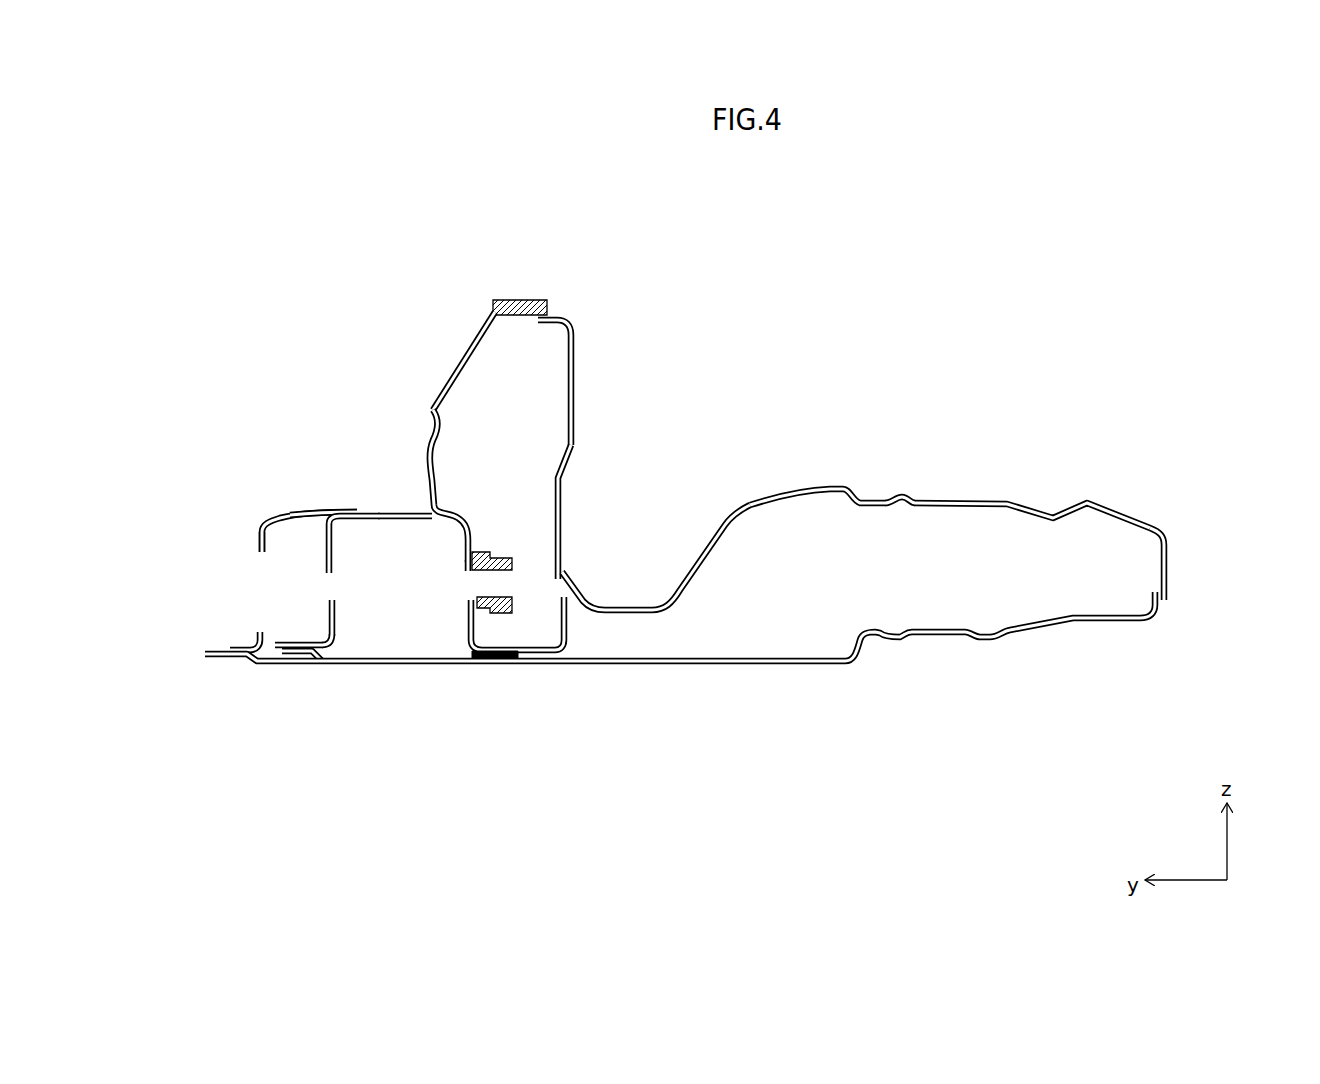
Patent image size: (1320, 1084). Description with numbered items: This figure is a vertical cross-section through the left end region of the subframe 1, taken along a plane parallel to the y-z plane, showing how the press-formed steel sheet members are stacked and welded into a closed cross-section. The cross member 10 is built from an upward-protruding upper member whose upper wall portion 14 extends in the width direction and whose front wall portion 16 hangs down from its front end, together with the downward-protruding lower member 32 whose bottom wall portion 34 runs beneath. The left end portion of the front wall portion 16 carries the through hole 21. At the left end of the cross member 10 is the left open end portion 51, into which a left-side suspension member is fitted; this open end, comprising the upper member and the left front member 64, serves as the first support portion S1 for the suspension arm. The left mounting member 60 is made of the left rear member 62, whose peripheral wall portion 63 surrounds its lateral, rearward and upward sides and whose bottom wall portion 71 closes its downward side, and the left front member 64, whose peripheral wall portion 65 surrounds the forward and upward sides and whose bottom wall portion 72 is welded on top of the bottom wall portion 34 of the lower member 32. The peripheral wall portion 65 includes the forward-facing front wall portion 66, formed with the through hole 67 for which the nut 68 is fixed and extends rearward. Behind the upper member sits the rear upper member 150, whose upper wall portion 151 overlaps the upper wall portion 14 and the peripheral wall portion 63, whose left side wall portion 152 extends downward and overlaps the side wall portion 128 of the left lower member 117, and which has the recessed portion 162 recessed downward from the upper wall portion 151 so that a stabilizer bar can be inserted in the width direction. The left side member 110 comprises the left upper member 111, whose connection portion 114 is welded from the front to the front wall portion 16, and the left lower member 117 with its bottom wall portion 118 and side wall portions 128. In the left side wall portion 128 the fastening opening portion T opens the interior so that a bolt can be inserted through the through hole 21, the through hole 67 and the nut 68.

The subframe 1 is at (772, 315).
The cross member 10 is at (412, 508).
The upper wall portion 14 is at (377, 513).
The front wall portion 16 is at (333, 640).
The through hole 21 is at (330, 600).
The lower member 32 is at (433, 640).
The bottom wall portion 34 is at (373, 660).
The left open end portion 51 is at (410, 688).
The left mounting member 60 is at (627, 290).
The left rear member 62 is at (590, 355).
The peripheral wall portion 63 is at (583, 430).
The left front member 64 is at (450, 365).
The peripheral wall portion 65 is at (428, 417).
The front wall portion 66 is at (465, 553).
The through hole 67 is at (465, 572).
The nut 68 is at (483, 560).
The bottom wall portion 71 is at (532, 660).
The bottom wall portion 72 is at (492, 660).
The left side member 110 is at (273, 513).
The left upper member 111 is at (263, 527).
The connection portion 114 is at (320, 508).
The left lower member 117 is at (630, 700).
The bottom wall portion 118 is at (727, 666).
The side wall portion 128 is at (1160, 603).
The rear upper member 150 is at (980, 470).
The upper wall portion 151 is at (890, 500).
The left side wall portion 152 is at (1165, 540).
The recessed portion 162 is at (628, 578).
The first support portion S1 is at (378, 688).
The fastening opening portion T is at (270, 594).